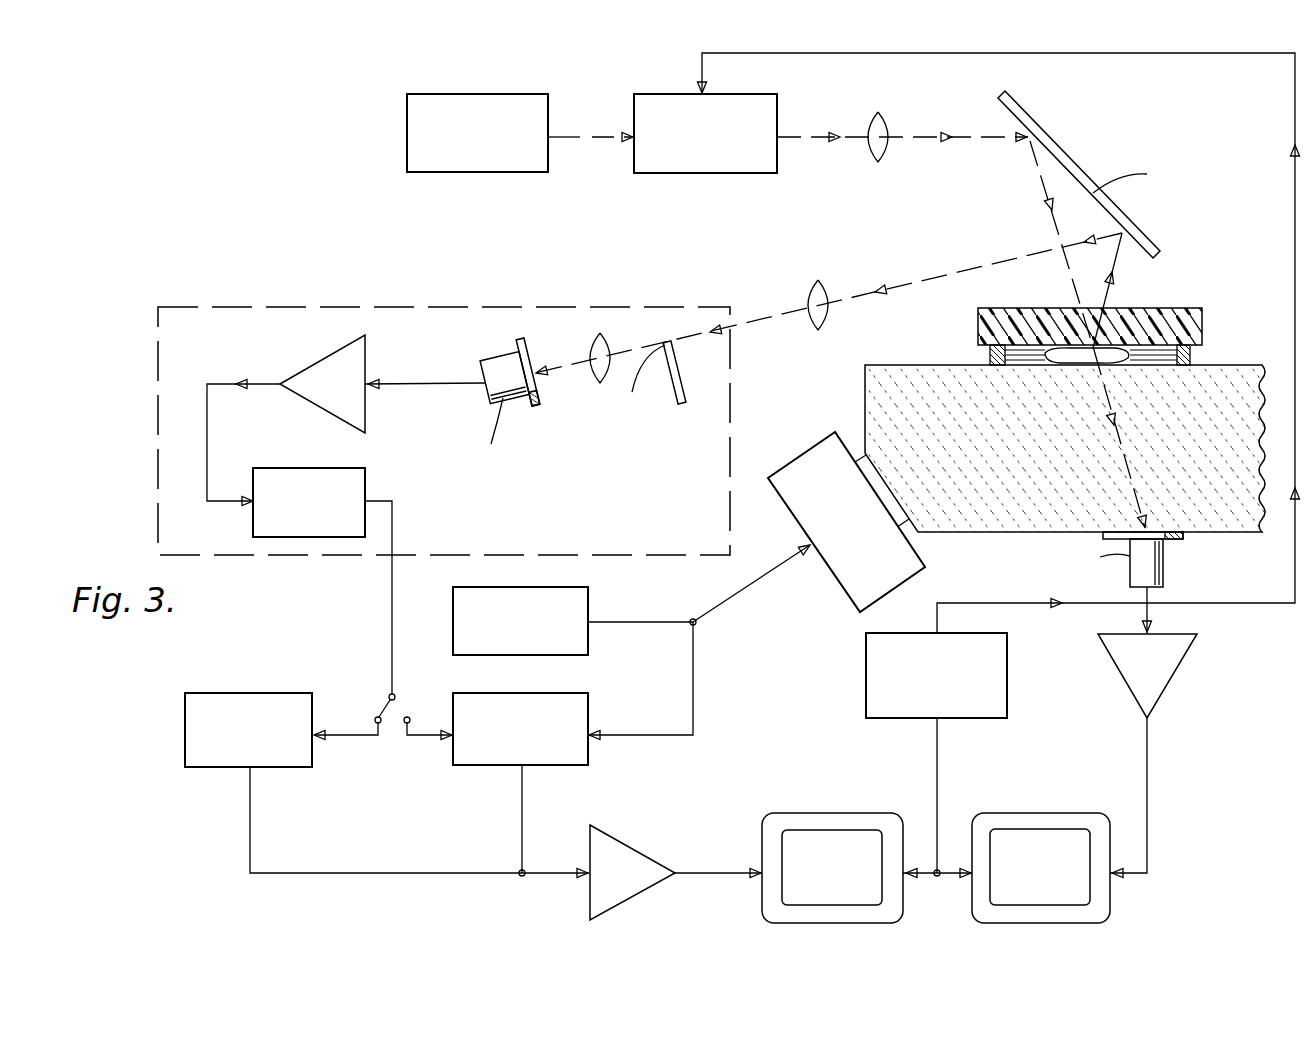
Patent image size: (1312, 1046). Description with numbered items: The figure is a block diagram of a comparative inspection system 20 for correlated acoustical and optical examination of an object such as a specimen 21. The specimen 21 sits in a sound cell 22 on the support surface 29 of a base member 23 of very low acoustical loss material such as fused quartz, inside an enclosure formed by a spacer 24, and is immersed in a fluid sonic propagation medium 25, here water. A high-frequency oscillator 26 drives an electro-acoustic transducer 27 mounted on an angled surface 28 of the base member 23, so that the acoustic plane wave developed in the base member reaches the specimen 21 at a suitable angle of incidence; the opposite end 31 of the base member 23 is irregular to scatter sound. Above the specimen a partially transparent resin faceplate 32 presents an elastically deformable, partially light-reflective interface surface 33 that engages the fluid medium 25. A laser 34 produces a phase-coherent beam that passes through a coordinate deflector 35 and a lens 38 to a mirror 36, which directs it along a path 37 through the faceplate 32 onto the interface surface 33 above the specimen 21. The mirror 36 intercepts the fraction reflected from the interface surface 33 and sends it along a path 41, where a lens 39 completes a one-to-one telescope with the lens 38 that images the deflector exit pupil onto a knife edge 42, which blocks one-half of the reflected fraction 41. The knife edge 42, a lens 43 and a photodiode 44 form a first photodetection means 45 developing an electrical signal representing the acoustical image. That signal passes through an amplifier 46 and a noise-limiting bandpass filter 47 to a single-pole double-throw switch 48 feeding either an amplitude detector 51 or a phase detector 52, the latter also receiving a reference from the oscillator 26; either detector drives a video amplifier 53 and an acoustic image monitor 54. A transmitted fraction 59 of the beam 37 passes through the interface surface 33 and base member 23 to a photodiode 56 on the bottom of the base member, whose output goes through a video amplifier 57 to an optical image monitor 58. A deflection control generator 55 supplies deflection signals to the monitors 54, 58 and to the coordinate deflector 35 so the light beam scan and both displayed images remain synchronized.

The comparative inspection system 20 is at (851, 119).
The specimen 21 is at (1105, 345).
The sound cell 22 is at (950, 352).
The base member 23 is at (865, 382).
The spacer 24 is at (1192, 358).
The sonic propagation medium 25 is at (1203, 344).
The high-frequency oscillator 26 is at (582, 587).
The electro-acoustic transducer 27 is at (812, 448).
The angled surface 28 is at (857, 455).
The support surface 29 is at (900, 365).
The end of base member 31 is at (1258, 498).
The faceplate 32 is at (1040, 312).
The interface surface 33 is at (978, 318).
The laser 34 is at (460, 93).
The coordinate deflector 35 is at (665, 93).
The mirror 36 is at (1013, 105).
The beam path 37 is at (1031, 157).
The lens 38 is at (883, 120).
The lens 39 is at (819, 283).
The reflected fraction path 41 is at (985, 262).
The knife edge 42 is at (673, 344).
The lens 43 is at (604, 336).
The photodiode 44 is at (497, 350).
The first photodetection means 45 is at (340, 305).
The amplifier 46 is at (320, 357).
The bandpass filter 47 is at (315, 468).
The switch 48 is at (385, 703).
The amplitude detector 51 is at (255, 693).
The phase detector 52 is at (585, 693).
The video amplifier 53 is at (632, 846).
The acoustic image monitor 54 is at (762, 900).
The deflection control generator 55 is at (1010, 668).
The photodiode 56 is at (1165, 567).
The video amplifier 57 is at (1190, 655).
The optical image monitor 58 is at (1110, 906).
The transmitted fraction 59 is at (1112, 402).